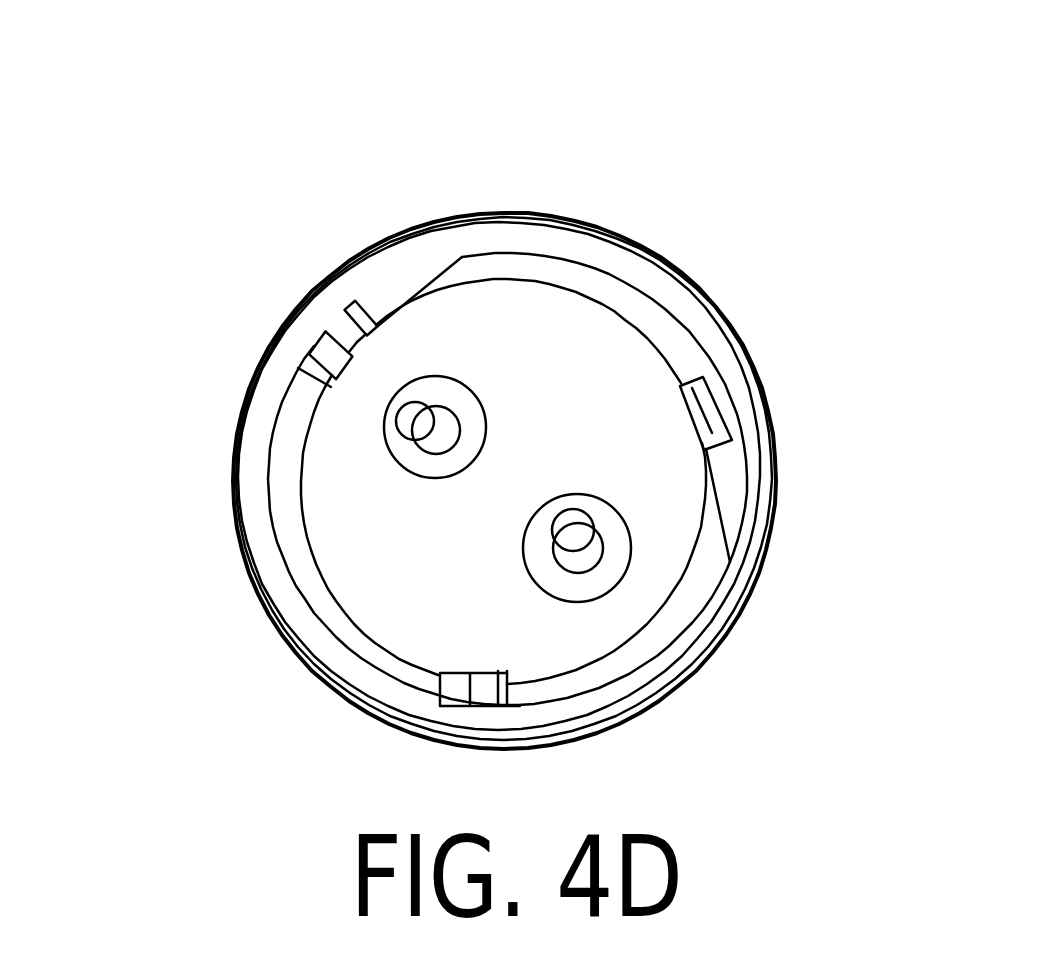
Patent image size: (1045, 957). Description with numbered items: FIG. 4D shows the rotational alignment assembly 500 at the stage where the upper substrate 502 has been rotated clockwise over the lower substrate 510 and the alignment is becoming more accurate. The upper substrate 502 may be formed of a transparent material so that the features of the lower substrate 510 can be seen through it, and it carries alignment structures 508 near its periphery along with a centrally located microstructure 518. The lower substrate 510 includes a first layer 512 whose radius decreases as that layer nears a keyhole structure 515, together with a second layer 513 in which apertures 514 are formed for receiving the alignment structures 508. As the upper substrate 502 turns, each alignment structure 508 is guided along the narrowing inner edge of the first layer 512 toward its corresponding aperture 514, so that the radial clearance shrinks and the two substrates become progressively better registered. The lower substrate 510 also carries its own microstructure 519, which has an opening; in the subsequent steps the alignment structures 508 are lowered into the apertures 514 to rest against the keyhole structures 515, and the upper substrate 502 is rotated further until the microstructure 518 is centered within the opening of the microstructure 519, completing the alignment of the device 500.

The connector assembly 500 is at (126, 143).
The upper substrate 502 is at (584, 336).
The alignment structure 508 is at (700, 366).
The lower substrate 510 is at (778, 481).
The first layer 512 is at (250, 497).
The second layer 513 is at (330, 608).
The aperture 514 is at (337, 328).
The keyhole structure 515 is at (378, 295).
The microstructure 518 is at (392, 427).
The microstructure 519 is at (482, 405).